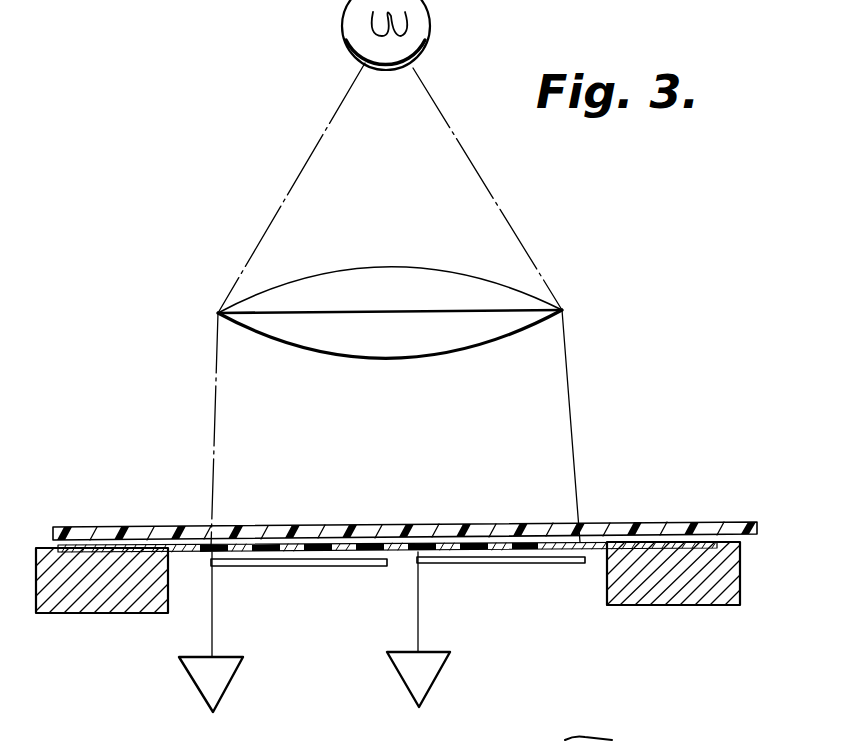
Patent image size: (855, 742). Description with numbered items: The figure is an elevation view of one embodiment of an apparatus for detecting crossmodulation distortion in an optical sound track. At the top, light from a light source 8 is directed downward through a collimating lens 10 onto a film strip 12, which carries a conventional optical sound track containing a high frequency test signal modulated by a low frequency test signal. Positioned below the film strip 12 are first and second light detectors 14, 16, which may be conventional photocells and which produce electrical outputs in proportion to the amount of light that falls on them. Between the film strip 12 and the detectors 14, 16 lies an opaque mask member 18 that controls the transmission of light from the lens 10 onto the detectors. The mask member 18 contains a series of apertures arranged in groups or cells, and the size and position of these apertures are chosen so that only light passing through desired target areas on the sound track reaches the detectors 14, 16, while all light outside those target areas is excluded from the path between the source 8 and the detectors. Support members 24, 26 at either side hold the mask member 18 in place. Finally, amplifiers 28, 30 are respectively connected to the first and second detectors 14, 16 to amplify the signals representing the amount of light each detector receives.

The light source 8 is at (350, 39).
The collimating lens 10 is at (460, 288).
The film strip 12 is at (673, 528).
The first light detector 14 is at (308, 567).
The second light detector 16 is at (515, 565).
The opaque mask member 18 is at (185, 547).
The support member 24 is at (85, 584).
The support member 26 is at (700, 575).
The amplifier 28 is at (207, 684).
The amplifier 30 is at (438, 672).